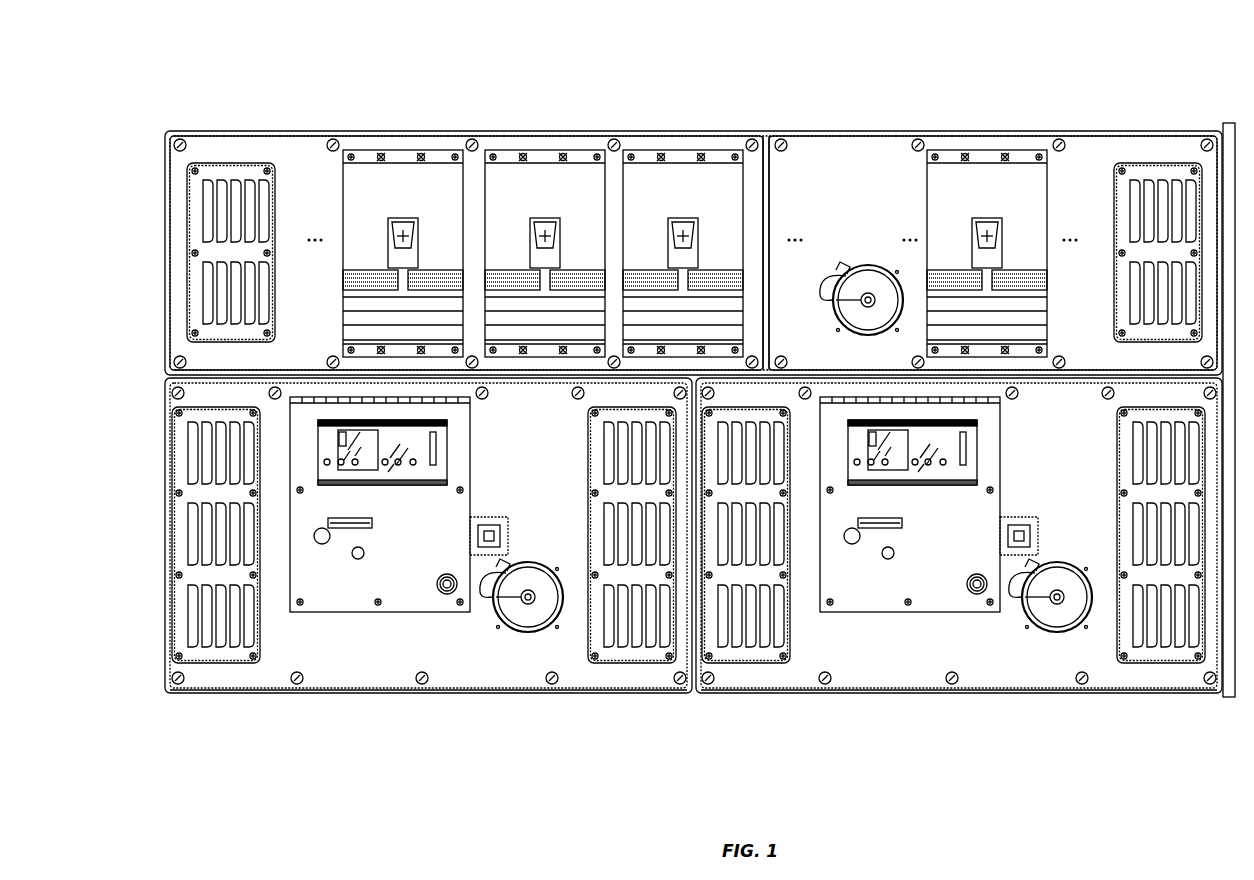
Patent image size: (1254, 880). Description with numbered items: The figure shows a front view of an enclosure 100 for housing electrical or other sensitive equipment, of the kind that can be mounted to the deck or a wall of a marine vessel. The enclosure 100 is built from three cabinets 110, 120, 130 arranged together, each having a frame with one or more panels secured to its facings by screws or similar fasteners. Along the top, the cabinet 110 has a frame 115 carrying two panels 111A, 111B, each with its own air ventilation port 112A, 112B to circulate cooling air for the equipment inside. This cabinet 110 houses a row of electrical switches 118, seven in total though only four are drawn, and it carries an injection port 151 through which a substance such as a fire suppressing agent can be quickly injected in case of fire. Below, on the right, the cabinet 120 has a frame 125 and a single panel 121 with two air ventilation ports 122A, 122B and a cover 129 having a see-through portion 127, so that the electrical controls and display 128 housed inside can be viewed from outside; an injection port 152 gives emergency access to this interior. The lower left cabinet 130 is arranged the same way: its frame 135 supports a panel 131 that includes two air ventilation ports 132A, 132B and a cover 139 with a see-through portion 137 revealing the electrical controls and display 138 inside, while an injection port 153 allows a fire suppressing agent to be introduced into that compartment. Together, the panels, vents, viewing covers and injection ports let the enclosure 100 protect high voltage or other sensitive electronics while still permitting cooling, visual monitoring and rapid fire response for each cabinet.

The enclosure 100 is at (1087, 100).
The cabinet 110 is at (846, 361).
The panel 111A is at (852, 138).
The panel 111B is at (290, 145).
The air ventilation port 112A is at (1132, 245).
The air ventilation port 112B is at (245, 253).
The frame 115 is at (766, 133).
The electrical switches 118 is at (675, 178).
The injection port 151 is at (868, 287).
The cabinet 120 is at (900, 673).
The panel 121 is at (1032, 668).
The air ventilation port 122A is at (1156, 650).
The air ventilation port 122B is at (748, 655).
The frame 125 is at (960, 695).
The see-through portion 127 is at (917, 482).
The electrical controls and display 128 is at (945, 442).
The cover 129 is at (942, 593).
The injection port 152 is at (1057, 582).
The cabinet 130 is at (372, 673).
The panel 131 is at (506, 668).
The air ventilation port 132A is at (636, 650).
The air ventilation port 132B is at (218, 655).
The frame 135 is at (430, 695).
The see-through portion 137 is at (387, 482).
The electrical controls and display 138 is at (417, 442).
The cover 139 is at (412, 593).
The injection port 153 is at (527, 582).